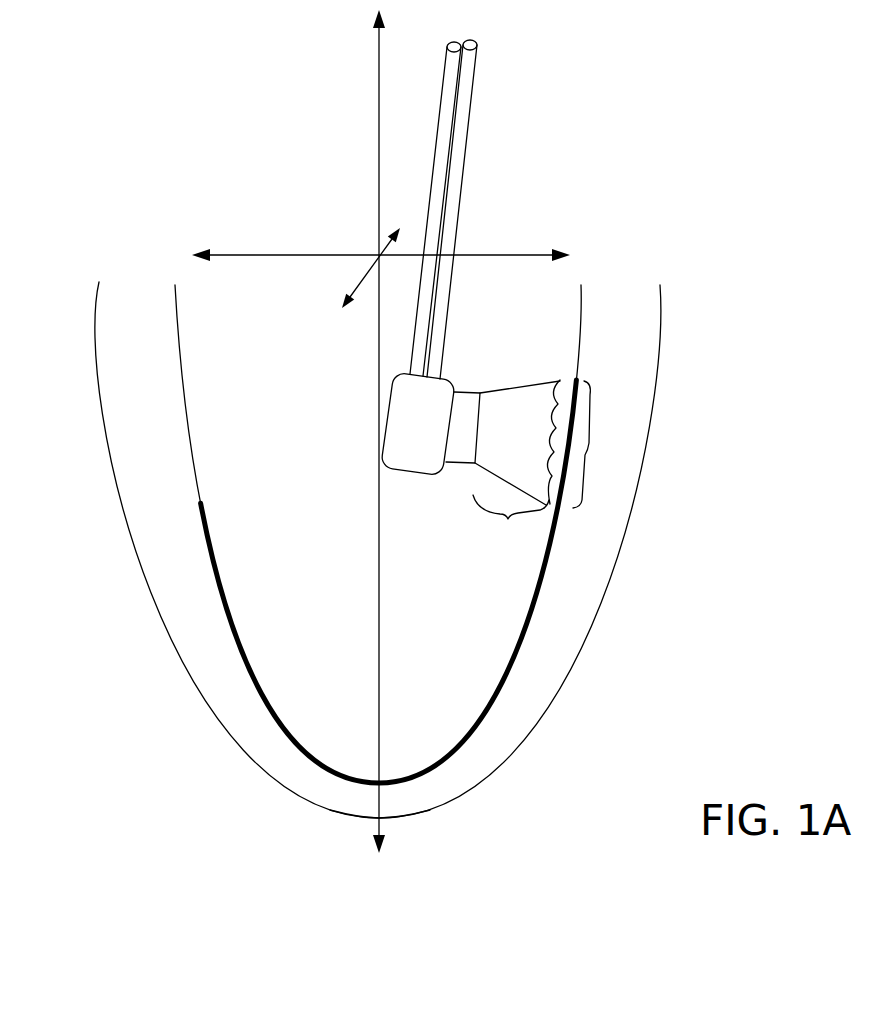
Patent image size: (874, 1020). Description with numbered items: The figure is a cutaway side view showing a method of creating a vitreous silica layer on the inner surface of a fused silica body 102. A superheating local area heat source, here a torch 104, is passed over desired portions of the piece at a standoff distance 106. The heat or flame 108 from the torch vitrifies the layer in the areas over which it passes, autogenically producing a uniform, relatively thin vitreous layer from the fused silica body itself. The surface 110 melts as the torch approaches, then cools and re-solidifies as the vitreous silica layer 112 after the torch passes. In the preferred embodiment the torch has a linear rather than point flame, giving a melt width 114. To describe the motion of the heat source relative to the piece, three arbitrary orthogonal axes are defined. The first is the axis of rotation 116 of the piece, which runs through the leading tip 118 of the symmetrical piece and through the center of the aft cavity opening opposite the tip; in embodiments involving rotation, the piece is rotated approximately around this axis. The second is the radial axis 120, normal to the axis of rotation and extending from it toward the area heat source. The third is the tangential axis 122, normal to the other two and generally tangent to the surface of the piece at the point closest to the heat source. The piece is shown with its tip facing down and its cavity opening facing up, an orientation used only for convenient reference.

The fused silica body 102 is at (572, 356).
The torch 104 is at (391, 474).
The standoff distance 106 is at (506, 519).
The flame 108 is at (523, 386).
The surface 110 is at (573, 380).
The vitreous silica layer 112 is at (522, 642).
The melt width 114 is at (589, 447).
The axis of rotation 116 is at (378, 347).
The leading tip 118 is at (370, 818).
The radial axis 120 is at (484, 254).
The tangential axis 122 is at (357, 290).